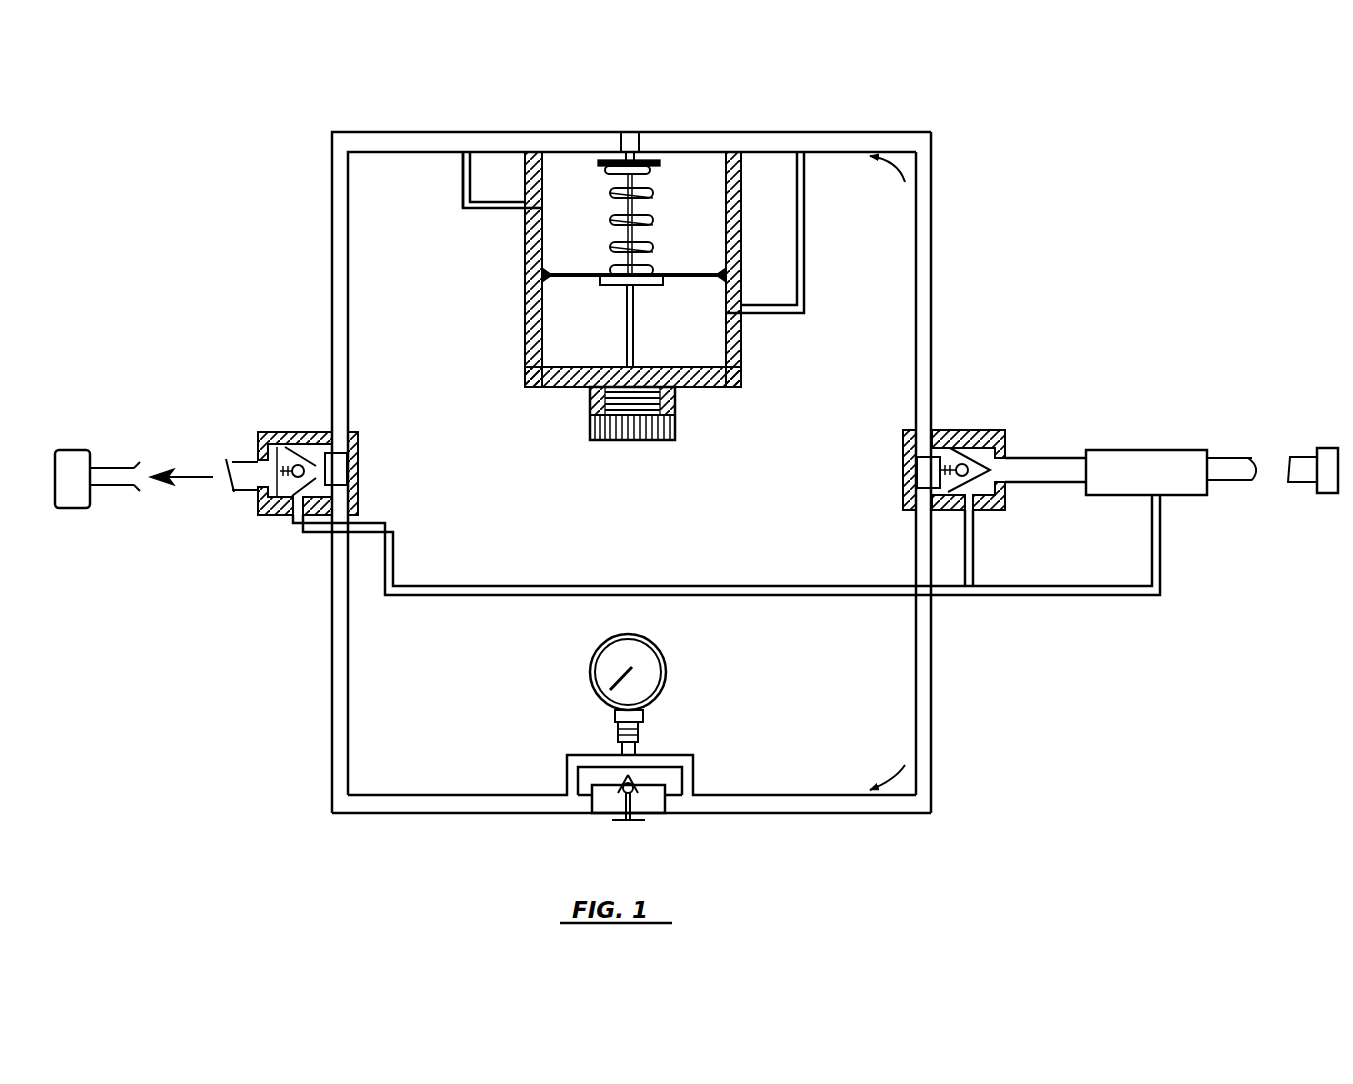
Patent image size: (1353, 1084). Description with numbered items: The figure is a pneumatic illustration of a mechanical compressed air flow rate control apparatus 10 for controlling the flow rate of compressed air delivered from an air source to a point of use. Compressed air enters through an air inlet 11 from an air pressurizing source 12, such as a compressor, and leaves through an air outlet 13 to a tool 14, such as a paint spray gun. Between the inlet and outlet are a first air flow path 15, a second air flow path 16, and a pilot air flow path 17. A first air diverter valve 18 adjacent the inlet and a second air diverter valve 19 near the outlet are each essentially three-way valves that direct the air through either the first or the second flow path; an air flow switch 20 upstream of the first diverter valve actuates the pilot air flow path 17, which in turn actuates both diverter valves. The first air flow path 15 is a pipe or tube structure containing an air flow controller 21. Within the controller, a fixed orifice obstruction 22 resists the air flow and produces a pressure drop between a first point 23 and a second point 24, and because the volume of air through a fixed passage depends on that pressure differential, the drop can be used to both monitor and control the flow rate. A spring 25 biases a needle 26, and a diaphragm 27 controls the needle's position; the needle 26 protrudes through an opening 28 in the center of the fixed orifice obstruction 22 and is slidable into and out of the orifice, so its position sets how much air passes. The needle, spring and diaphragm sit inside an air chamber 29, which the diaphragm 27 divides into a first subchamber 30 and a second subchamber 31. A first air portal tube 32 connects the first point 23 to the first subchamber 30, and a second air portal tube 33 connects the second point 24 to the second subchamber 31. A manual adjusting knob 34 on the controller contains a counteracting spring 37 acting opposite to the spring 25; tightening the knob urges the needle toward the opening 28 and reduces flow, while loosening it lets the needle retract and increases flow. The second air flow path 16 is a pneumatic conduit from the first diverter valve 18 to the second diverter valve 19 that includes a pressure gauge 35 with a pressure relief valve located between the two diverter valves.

The mechanical compressed air flow rate control apparatus 10 is at (290, 150).
The air inlet 11 is at (1256, 462).
The air pressurizing source 12 is at (1328, 448).
The air outlet 13 is at (222, 468).
The tool 14 is at (88, 425).
The first air flow path 15 is at (934, 247).
The second air flow path 16 is at (934, 732).
The pilot air flow path 17 is at (770, 586).
The first air diverter valve 18 is at (978, 430).
The second air diverter valve 19 is at (283, 430).
The air flow switch 20 is at (1180, 414).
The air flow controller 21 is at (510, 325).
The fixed orifice obstruction 22 is at (665, 140).
The first point 23 is at (800, 152).
The second point 24 is at (468, 150).
The spring 25 is at (610, 217).
The needle 26 is at (650, 220).
The diaphragm 27 is at (570, 275).
The opening 28 is at (630, 158).
The air chamber 29 is at (575, 340).
The first subchamber 30 is at (710, 345).
The second subchamber 31 is at (578, 175).
The first air portal tube 32 is at (805, 252).
The second air portal tube 33 is at (463, 177).
The manual adjusting knob 34 is at (650, 440).
The pressure gauge 35 is at (665, 675).
The counteracting spring 37 is at (660, 412).